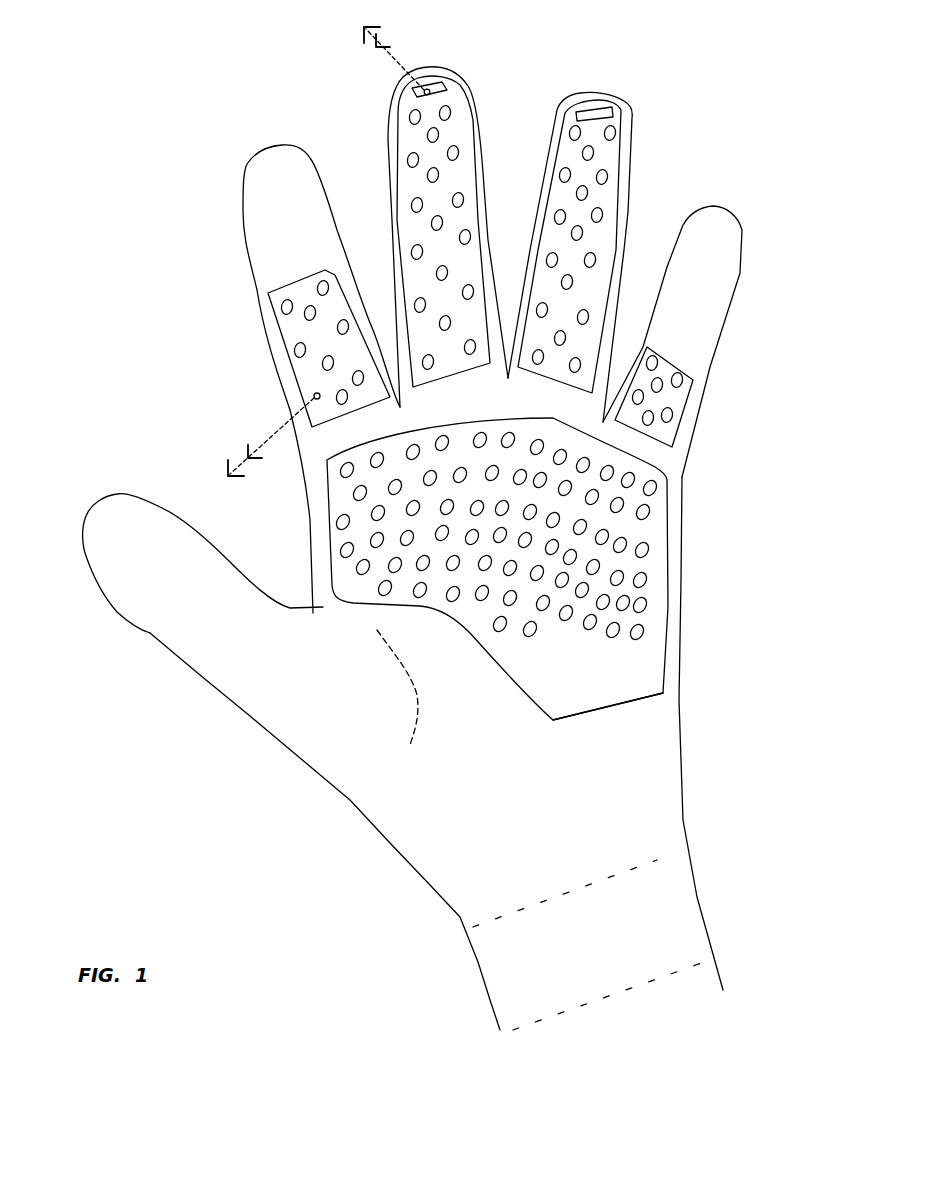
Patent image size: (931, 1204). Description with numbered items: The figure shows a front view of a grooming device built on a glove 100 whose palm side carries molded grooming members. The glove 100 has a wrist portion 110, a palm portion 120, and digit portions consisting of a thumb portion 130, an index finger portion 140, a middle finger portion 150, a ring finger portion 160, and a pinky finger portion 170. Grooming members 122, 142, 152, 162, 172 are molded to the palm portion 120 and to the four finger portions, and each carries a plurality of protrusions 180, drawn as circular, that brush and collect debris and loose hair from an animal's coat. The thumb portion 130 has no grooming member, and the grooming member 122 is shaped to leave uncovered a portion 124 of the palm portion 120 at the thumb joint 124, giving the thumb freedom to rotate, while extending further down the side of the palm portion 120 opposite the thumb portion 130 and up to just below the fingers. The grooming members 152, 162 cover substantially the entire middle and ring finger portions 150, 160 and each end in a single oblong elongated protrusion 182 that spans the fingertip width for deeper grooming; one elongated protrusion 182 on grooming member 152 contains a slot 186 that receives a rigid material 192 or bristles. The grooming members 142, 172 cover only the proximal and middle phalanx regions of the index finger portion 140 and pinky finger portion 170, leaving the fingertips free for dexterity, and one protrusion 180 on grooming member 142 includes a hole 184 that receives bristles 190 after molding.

The glove 100 is at (399, 861).
The wrist portion 110 is at (663, 930).
The palm portion 120 is at (672, 630).
The grooming member 122 is at (597, 712).
The thumb joint 124 is at (417, 692).
The thumb portion 130 is at (162, 508).
The index finger portion 140 is at (240, 181).
The grooming member 142 is at (306, 372).
The middle finger portion 150 is at (388, 120).
The grooming member 152 is at (458, 126).
The ring finger portion 160 is at (632, 112).
The grooming member 162 is at (614, 148).
The pinky finger portion 170 is at (744, 221).
The grooming member 172 is at (683, 398).
The protrusions 180 is at (414, 207).
The elongated protrusions 182 is at (436, 88).
The hole 184 is at (318, 398).
The slot 186 is at (422, 92).
The bristles 190 is at (267, 445).
The rigid material 192 is at (391, 58).